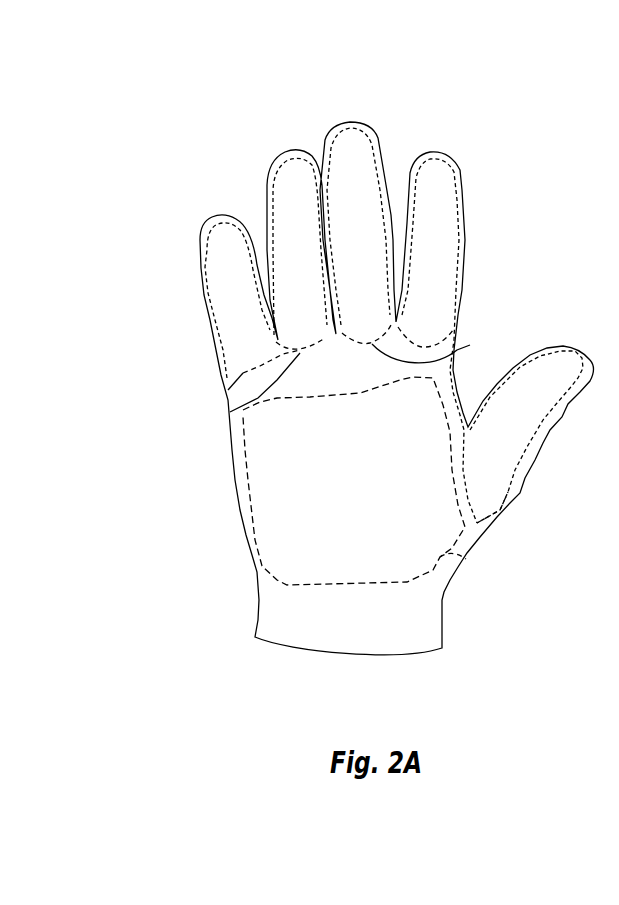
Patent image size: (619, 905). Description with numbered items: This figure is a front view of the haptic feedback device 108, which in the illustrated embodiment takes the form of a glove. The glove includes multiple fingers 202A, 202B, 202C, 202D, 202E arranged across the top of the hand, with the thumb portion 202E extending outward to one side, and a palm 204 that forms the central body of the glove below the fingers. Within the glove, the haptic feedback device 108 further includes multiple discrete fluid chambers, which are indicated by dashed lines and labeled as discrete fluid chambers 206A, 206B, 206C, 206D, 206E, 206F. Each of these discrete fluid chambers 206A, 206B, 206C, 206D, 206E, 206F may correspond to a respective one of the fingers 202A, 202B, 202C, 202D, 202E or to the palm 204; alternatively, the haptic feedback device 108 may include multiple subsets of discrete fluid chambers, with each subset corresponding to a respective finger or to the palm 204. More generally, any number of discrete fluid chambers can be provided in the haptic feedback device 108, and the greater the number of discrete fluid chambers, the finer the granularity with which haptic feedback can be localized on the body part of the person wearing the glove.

The haptic feedback device 108 is at (210, 105).
The palm 204 is at (240, 510).
The finger 202A is at (223, 217).
The finger 202B is at (288, 150).
The finger 202C is at (360, 123).
The finger 202D is at (432, 152).
The finger 202E is at (563, 347).
The discrete fluid chamber 206A is at (228, 390).
The discrete fluid chamber 206B is at (230, 412).
The discrete fluid chamber 206C is at (470, 345).
The discrete fluid chamber 206D is at (427, 347).
The discrete fluid chamber 206E is at (510, 518).
The discrete fluid chamber 206F is at (467, 560).